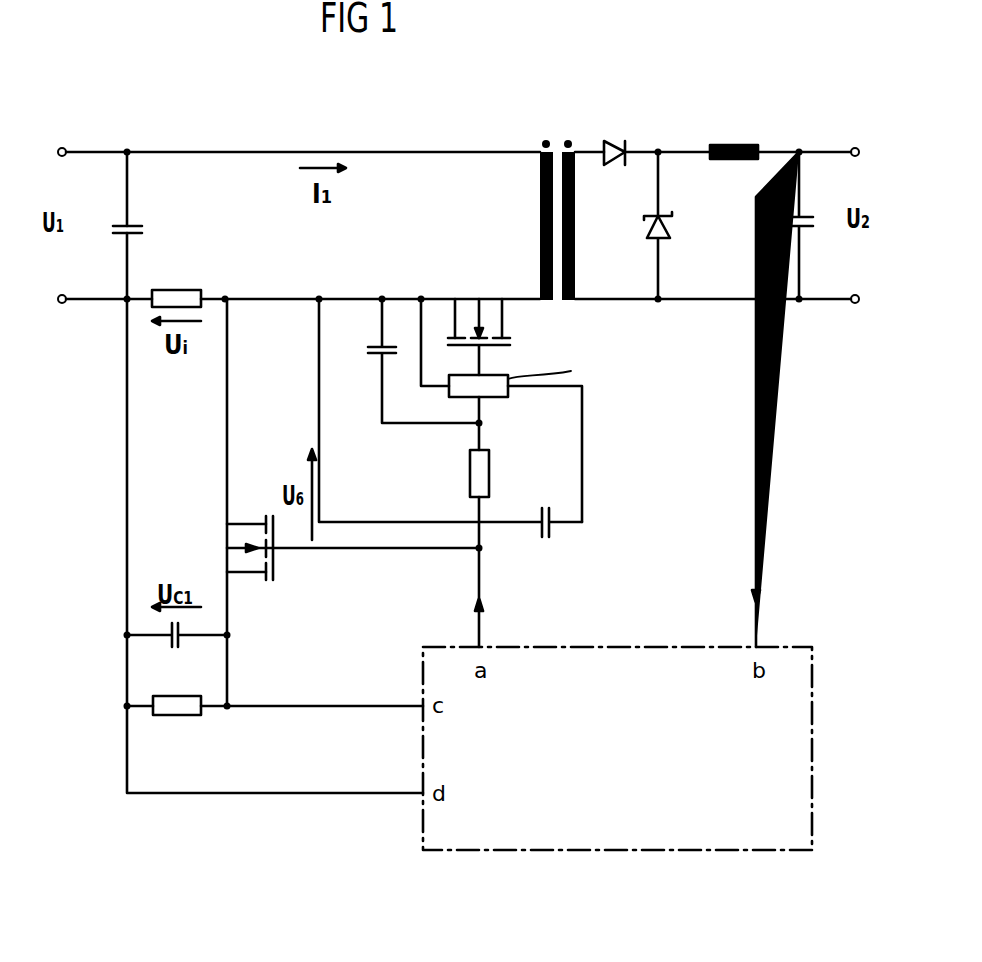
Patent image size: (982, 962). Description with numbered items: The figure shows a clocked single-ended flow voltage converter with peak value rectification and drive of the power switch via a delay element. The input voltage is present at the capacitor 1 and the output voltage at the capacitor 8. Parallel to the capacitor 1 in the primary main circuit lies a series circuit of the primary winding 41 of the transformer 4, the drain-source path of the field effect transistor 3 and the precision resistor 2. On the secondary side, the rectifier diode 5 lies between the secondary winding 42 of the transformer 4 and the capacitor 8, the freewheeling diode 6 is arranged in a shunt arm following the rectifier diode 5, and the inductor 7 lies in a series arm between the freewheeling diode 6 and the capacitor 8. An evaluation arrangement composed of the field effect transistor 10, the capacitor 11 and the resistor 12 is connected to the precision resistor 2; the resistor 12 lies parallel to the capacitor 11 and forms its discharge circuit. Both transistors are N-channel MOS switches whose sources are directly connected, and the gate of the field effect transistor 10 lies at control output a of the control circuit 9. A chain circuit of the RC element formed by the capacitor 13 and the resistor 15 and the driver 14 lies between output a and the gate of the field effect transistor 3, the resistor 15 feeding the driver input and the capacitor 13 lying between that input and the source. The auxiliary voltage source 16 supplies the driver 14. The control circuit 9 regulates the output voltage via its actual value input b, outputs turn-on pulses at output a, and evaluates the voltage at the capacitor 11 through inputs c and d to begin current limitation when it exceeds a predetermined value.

The capacitor 1 is at (143, 227).
The precision resistor 2 is at (176, 289).
The field effect transistor 3 is at (486, 336).
The transformer 4 is at (557, 255).
The primary winding 41 is at (540, 197).
The secondary winding 42 is at (575, 245).
The rectifier diode 5 is at (614, 140).
The freewheeling diode 6 is at (672, 226).
The inductor 7 is at (730, 144).
The capacitor 8 is at (814, 230).
The control circuit 9 is at (638, 850).
The field effect transistor 10 is at (274, 570).
The capacitor 11 is at (179, 646).
The resistor 12 is at (177, 716).
The capacitor 13 is at (372, 355).
The driver 14 is at (495, 398).
The resistor 15 is at (470, 474).
The auxiliary voltage source 16 is at (552, 535).